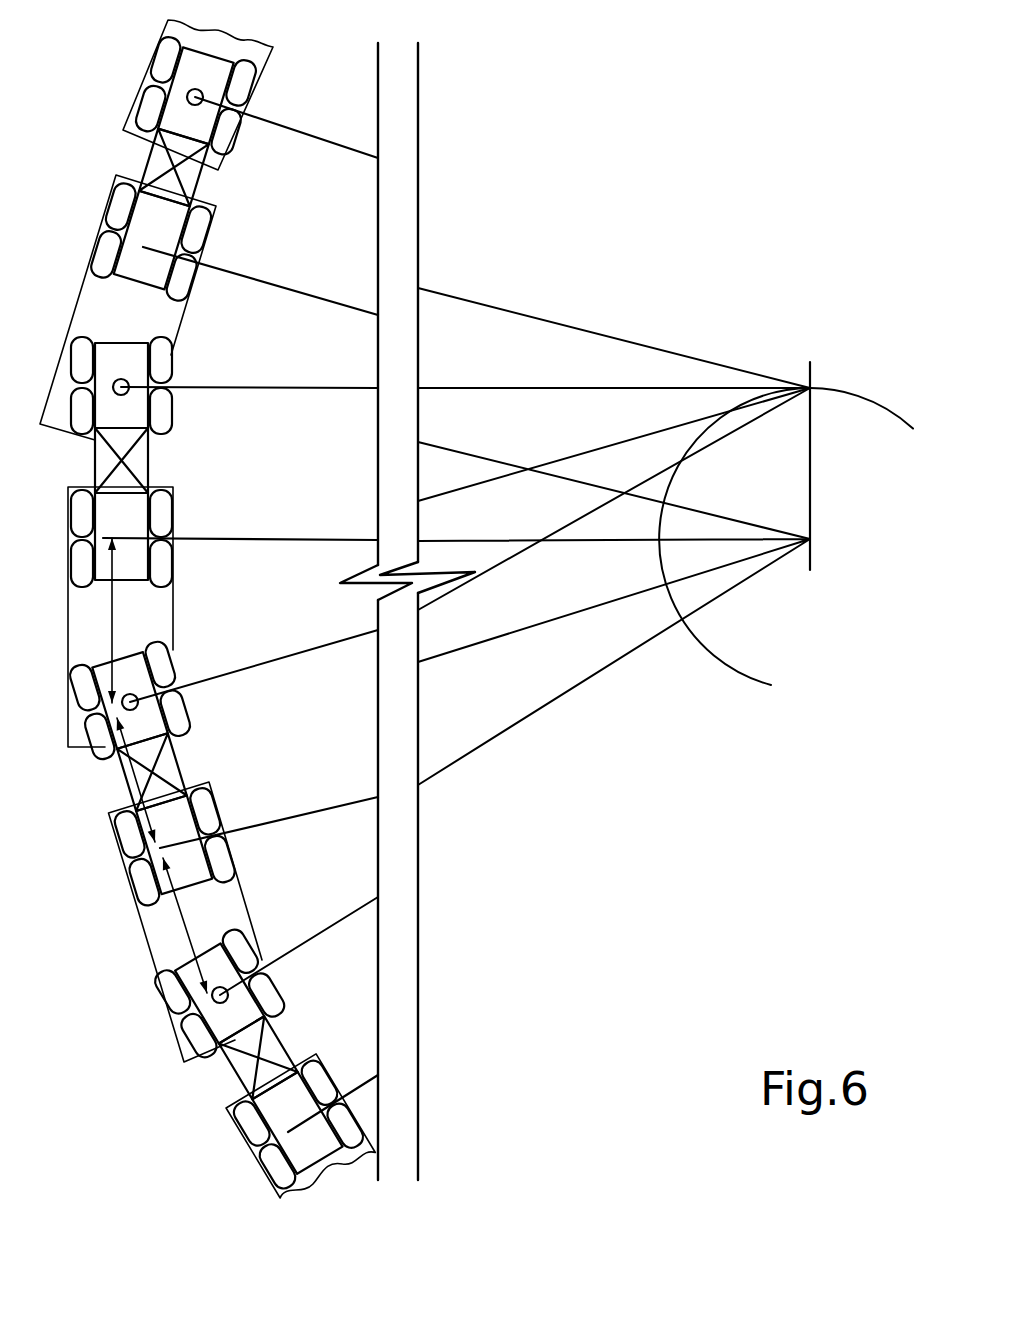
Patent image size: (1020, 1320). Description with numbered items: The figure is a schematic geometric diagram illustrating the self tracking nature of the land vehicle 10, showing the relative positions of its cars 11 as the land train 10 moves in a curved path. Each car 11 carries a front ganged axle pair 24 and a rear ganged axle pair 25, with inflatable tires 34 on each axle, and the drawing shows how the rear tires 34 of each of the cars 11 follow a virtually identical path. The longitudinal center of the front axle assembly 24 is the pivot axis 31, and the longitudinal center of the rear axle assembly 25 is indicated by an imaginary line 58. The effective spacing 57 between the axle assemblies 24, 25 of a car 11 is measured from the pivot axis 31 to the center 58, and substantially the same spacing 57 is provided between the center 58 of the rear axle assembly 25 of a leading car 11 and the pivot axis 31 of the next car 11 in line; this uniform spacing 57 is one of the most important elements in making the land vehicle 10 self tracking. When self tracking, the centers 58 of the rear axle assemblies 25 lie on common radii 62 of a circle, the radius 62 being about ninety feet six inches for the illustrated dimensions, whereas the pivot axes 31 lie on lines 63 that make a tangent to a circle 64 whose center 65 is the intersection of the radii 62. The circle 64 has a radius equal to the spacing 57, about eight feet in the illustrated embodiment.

The self-tracking land vehicle 10 is at (258, 772).
The car 11 is at (209, 613).
The front ganged axle pair 24 is at (182, 689).
The rear ganged axle pair 25 is at (166, 481).
The pivot axis 31 is at (123, 379).
The inflatable tires 34 is at (197, 282).
The spacing 57 is at (112, 632).
The longitudinal center of rear axle assembly 58 is at (175, 827).
The common radii 62 is at (526, 472).
The tangent lines 63 is at (237, 390).
The circle 64 is at (885, 402).
The center 65 is at (812, 548).